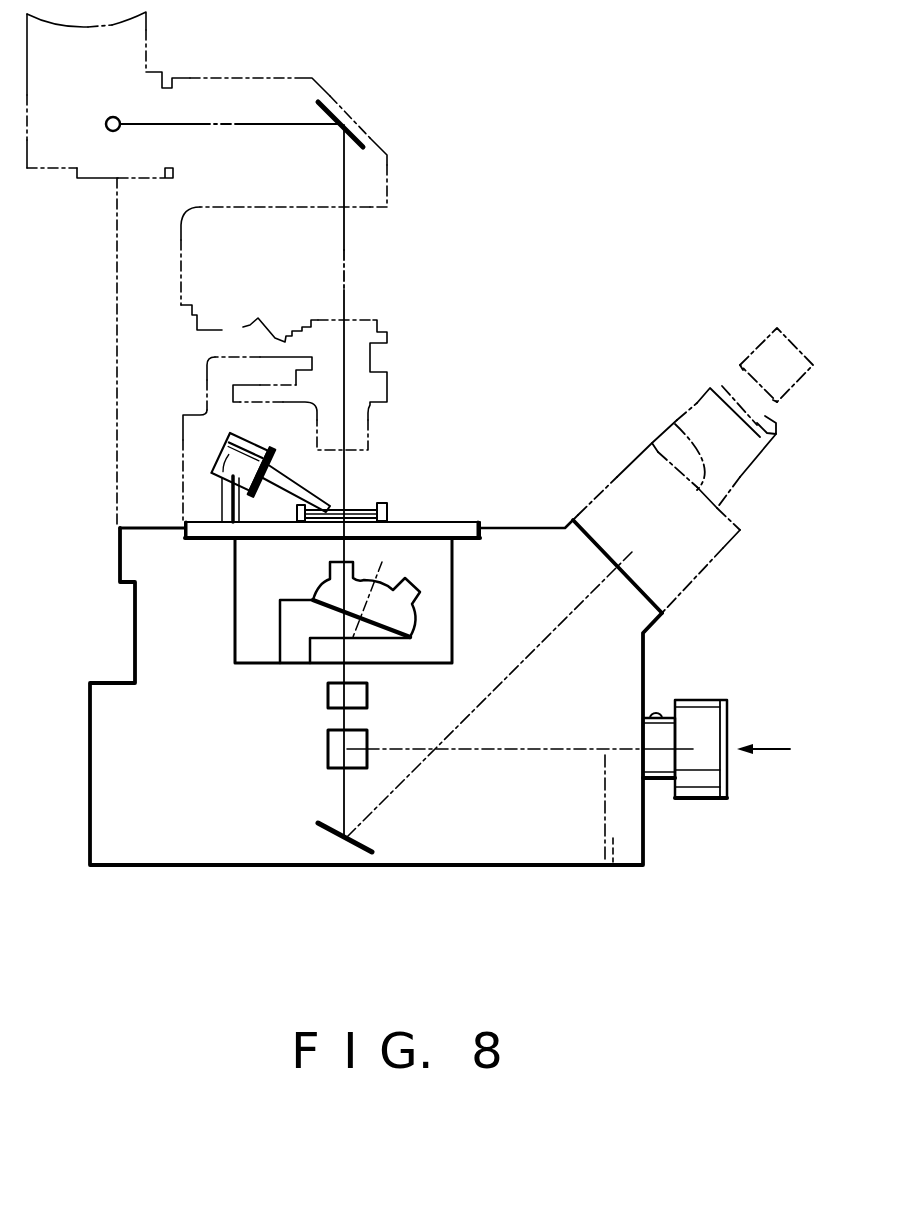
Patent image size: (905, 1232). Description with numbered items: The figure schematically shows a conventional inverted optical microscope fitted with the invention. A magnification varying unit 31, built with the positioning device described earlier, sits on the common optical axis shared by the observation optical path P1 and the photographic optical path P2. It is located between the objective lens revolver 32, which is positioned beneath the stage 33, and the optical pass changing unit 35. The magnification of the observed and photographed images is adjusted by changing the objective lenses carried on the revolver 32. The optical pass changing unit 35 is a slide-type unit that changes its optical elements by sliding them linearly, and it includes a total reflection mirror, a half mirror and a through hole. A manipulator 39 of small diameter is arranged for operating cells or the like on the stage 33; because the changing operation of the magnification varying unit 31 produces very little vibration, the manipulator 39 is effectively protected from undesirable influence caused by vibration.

The magnification varying unit 31 is at (368, 692).
The objective lens revolver 32 is at (422, 616).
The stage 33 is at (418, 528).
The optical pass changing unit 35 is at (231, 753).
The manipulator 39 is at (223, 443).
The observation optical path P1 is at (580, 603).
The photographic optical path P2 is at (540, 750).